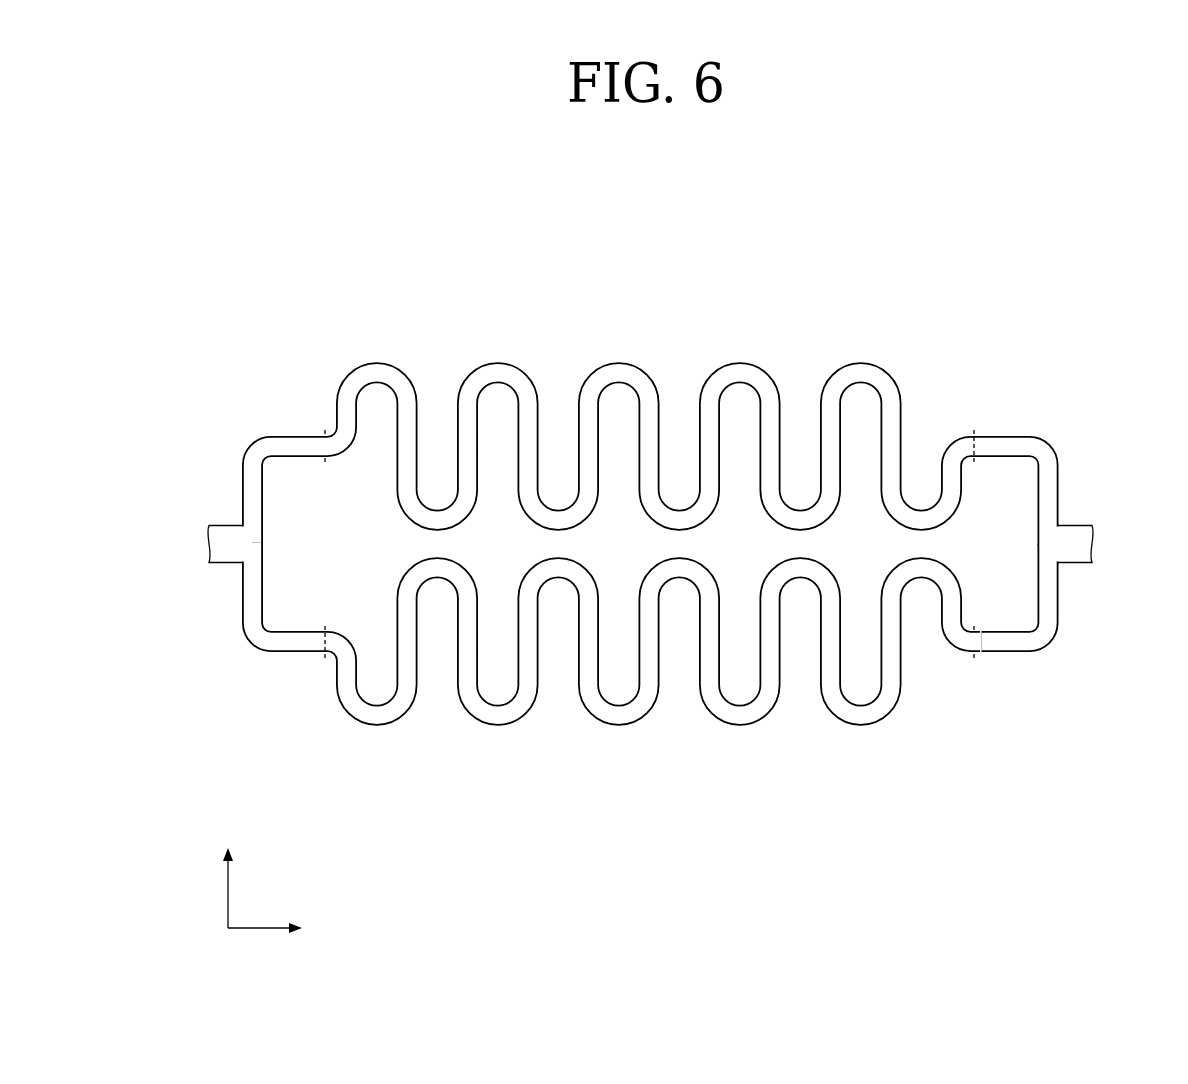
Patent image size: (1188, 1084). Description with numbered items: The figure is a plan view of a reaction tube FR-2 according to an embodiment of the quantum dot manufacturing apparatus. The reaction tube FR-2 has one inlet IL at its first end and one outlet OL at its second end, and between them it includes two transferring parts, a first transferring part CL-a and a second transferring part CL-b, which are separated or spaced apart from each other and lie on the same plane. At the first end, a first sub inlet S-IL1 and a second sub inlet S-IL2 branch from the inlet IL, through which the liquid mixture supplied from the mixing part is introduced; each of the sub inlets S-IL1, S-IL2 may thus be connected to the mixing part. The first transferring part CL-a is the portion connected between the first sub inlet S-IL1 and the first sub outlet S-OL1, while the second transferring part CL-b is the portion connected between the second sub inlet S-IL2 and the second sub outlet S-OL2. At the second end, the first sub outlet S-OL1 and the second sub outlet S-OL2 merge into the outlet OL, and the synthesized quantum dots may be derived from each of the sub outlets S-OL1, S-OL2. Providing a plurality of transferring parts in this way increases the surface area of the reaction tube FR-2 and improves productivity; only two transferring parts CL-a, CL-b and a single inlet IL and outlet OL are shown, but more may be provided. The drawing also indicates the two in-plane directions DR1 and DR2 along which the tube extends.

The reaction tube FR-2 is at (651, 488).
The inlet IL is at (222, 545).
The outlet OL is at (1078, 545).
The first sub inlet S-IL1 is at (292, 447).
The second sub inlet S-IL2 is at (293, 641).
The first sub outlet S-OL1 is at (1003, 447).
The second sub outlet S-OL2 is at (1003, 641).
The first transferring part CL-a is at (619, 374).
The second transferring part CL-b is at (619, 713).
The first direction DR1 is at (286, 928).
The second direction DR2 is at (229, 873).